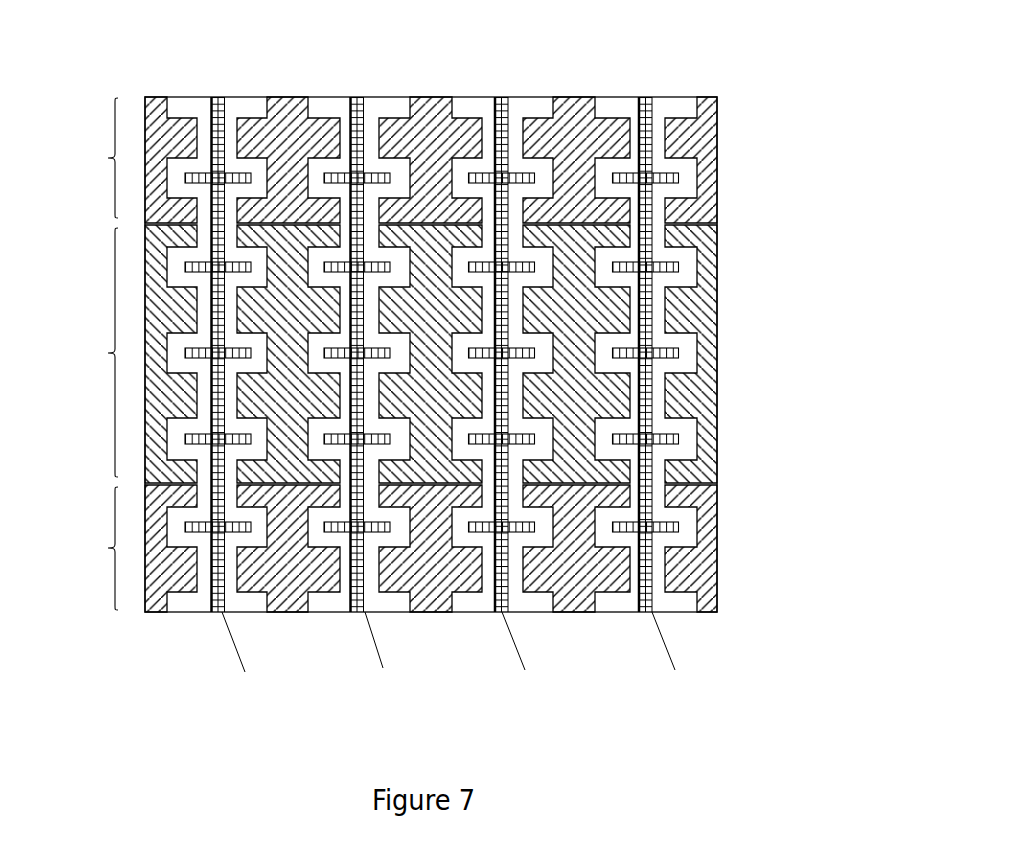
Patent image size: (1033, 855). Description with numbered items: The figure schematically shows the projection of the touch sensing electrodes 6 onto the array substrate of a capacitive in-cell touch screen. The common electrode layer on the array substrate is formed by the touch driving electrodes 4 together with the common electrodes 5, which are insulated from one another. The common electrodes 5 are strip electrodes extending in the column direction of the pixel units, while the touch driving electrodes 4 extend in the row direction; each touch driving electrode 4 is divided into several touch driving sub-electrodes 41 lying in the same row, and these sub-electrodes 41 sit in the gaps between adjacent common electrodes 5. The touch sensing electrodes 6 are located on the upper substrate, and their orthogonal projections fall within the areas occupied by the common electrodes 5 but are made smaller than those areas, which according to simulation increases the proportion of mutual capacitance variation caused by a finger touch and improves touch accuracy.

The touch driving sub-electrode 41 is at (163, 103).
The touch driving electrode 4 is at (398, 315).
The common electrode 5 is at (678, 608).
The touch sensing electrode 6 is at (665, 700).